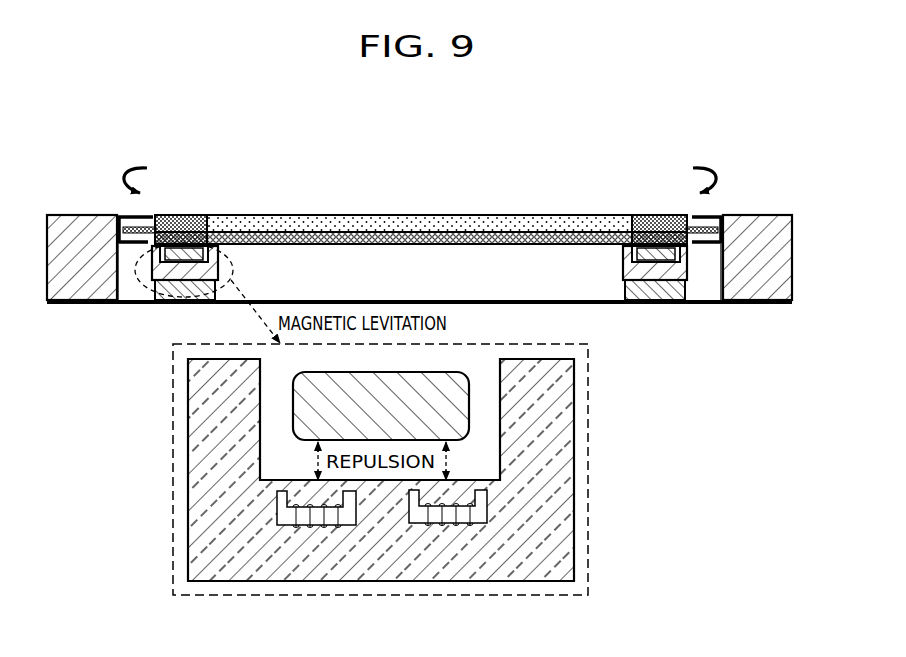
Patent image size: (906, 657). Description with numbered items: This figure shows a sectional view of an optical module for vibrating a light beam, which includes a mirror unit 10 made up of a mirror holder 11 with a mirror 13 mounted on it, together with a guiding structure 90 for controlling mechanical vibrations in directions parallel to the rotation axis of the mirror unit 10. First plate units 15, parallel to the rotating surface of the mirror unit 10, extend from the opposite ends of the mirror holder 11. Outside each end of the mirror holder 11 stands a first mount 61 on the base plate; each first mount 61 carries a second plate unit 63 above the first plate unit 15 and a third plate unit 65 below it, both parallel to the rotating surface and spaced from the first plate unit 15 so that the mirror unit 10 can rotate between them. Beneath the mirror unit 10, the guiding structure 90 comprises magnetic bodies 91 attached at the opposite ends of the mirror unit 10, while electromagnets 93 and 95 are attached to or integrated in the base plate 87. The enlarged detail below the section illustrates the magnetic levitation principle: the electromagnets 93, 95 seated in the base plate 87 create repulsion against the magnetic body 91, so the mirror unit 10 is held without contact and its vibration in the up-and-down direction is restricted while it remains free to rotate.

The mirror unit 10 is at (520, 200).
The mirror holder 11 is at (612, 216).
The mirror 13 is at (562, 224).
The first plate unit 15 is at (150, 224).
The first mount 61 is at (63, 224).
The second plate unit 63 is at (133, 217).
The third plate unit 65 is at (118, 272).
The base plate 87 is at (466, 304).
The guiding structure 90 is at (150, 292).
The magnetic body 91 is at (184, 250).
The electromagnet 93 is at (277, 509).
The electromagnet 95 is at (232, 262).